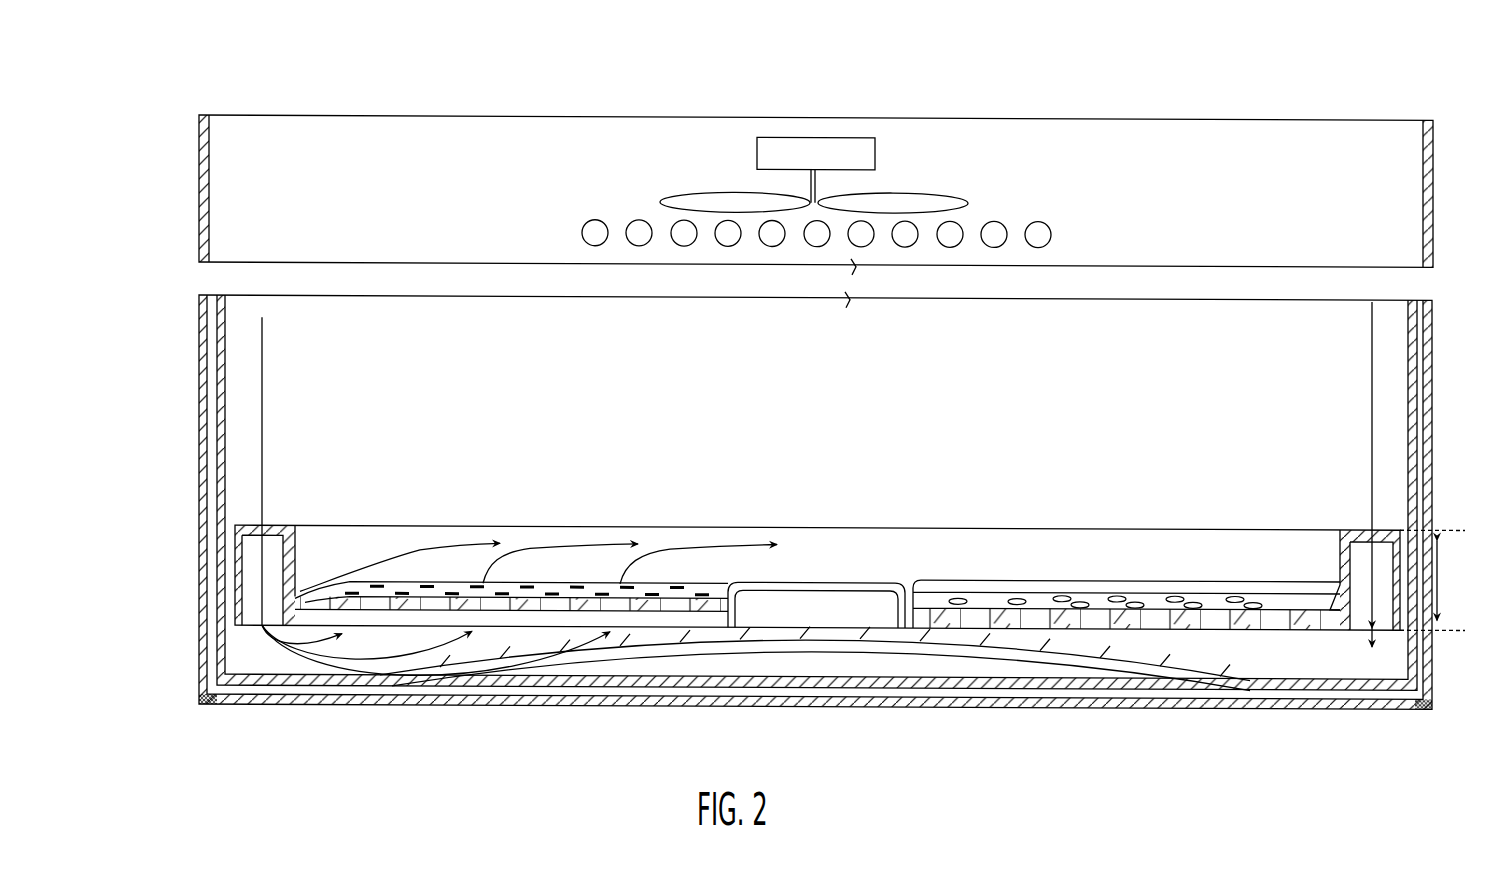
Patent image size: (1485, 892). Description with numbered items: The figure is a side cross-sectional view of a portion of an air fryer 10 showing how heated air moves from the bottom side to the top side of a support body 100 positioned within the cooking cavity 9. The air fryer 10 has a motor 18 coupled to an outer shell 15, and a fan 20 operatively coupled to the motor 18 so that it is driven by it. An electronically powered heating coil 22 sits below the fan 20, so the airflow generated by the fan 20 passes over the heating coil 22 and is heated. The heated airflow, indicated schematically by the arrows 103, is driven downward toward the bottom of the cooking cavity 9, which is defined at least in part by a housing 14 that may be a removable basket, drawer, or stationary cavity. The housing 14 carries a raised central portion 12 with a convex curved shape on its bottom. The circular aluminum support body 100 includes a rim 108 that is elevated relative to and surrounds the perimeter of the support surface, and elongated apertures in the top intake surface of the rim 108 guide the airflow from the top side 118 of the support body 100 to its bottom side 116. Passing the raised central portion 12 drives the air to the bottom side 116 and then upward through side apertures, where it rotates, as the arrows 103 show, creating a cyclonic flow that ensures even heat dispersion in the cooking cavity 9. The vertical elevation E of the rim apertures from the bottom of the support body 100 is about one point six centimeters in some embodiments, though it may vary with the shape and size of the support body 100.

The air fryer 10 is at (172, 117).
The outer shell 15 is at (200, 160).
The housing 14 is at (216, 350).
The cooking cavity 9 is at (831, 362).
The motor 18 is at (875, 152).
The fan 20 is at (960, 205).
The heating coil 22 is at (1042, 233).
The support body 100 is at (282, 500).
The arrows 103 is at (262, 362).
The raised central portion 12 is at (765, 637).
The top side 118 is at (1098, 600).
The rim 108 is at (1350, 530).
The bottom side 116 is at (1110, 628).
The vertical elevation E is at (1438, 583).